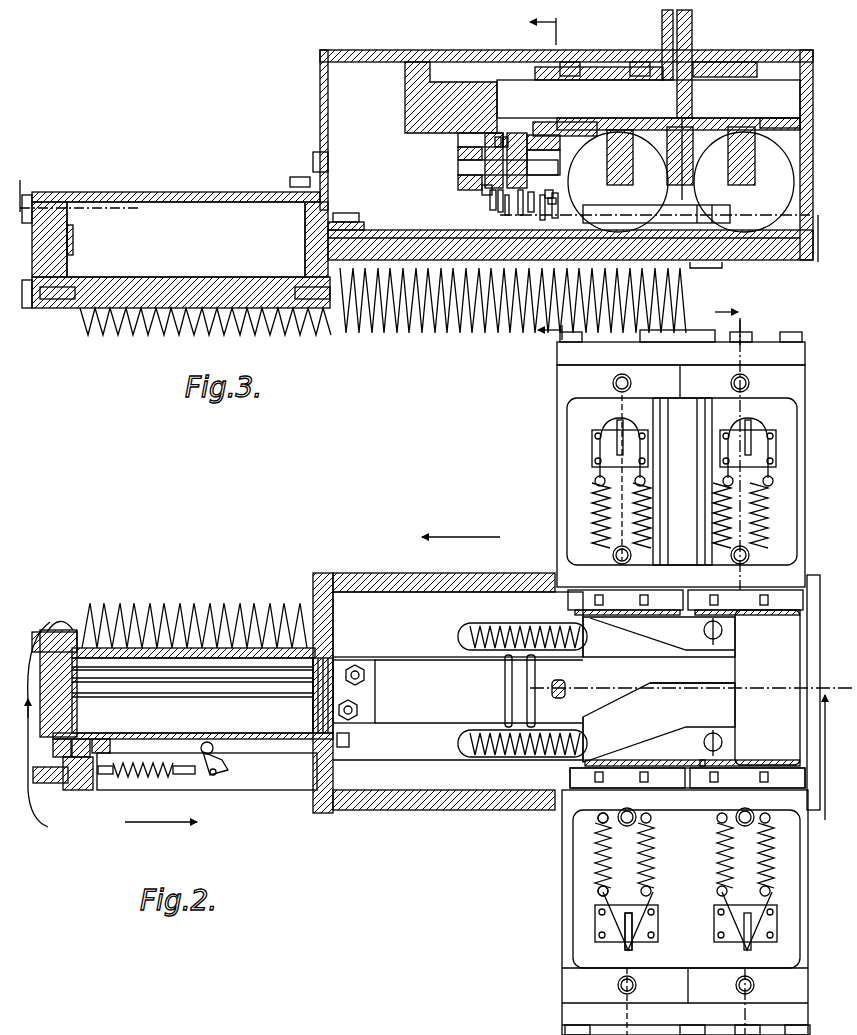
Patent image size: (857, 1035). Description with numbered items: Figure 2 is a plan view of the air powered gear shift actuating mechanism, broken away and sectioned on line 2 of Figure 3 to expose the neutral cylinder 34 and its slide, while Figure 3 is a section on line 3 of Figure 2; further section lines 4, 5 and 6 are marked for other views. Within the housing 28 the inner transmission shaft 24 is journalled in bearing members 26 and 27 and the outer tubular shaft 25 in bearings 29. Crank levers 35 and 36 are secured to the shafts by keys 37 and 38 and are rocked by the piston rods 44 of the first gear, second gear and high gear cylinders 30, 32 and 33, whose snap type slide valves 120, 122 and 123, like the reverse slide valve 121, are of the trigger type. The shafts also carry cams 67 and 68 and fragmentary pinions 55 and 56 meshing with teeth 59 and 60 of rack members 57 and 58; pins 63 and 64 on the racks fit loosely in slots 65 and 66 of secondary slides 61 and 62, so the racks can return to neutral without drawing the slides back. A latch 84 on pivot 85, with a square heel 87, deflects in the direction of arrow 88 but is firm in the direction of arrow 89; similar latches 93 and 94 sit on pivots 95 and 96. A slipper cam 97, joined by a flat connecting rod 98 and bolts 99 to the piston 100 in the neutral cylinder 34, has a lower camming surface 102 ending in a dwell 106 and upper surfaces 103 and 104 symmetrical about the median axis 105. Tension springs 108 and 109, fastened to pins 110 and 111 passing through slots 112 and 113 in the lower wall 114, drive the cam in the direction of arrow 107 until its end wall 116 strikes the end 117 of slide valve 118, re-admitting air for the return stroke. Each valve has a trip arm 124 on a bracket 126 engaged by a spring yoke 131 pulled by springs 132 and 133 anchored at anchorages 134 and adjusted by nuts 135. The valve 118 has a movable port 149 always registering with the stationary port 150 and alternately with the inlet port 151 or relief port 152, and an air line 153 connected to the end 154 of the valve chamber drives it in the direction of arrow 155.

In FIG. 3, the section line 2— 2 is at (417, 225).
In FIG. 2, the section line 3— 3 is at (424, 768).
In FIG. 2, the section line 4- 4 is at (719, 325).
In FIG. 3, the section line 5- 5 is at (538, 178).
In FIG. 3, the section line 6- 6 is at (692, 30).
In FIG. 3, the inner transmission shaft 24 is at (727, 80).
In FIG. 3, the outer tubular transmission shaft 25 is at (598, 66).
In FIG. 3, the bearing member 26 is at (797, 55).
In FIG. 3, the bearing member 27 is at (425, 62).
In FIG. 3, the housing 28 is at (320, 90).
In FIG. 3, the bearings 29 is at (570, 62).
In FIG. 2, the first-gear cylinder 30 is at (797, 372).
In FIG. 2, the second-gear cylinder 32 is at (578, 950).
In FIG. 2, the high-gear cylinder 33 is at (567, 415).
In FIG. 3, the neutral cylinder 34 is at (185, 192).
In FIG. 2, the neutral cylinder 34 is at (83, 640).
In FIG. 3, the crank lever 35 is at (752, 152).
In FIG. 3, the crank lever 36 is at (630, 150).
In FIG. 3, the key 37 is at (738, 120).
In FIG. 3, the key 38 is at (645, 118).
In FIG. 3, the piston rod 44 is at (640, 185).
In FIG. 3, the fragmentary pinion 55 is at (458, 140).
In FIG. 3, the fragmentary pinion 56 is at (545, 125).
In FIG. 3, the toothed rack member 57 is at (458, 185).
In FIG. 3, the toothed rack member 58 is at (548, 158).
In FIG. 3, the teeth 59 is at (458, 153).
In FIG. 3, the teeth 60 is at (520, 133).
In FIG. 3, the secondary slide 61 is at (492, 135).
In FIG. 3, the secondary slide 62 is at (495, 135).
In FIG. 3, the pin 63 is at (458, 167).
In FIG. 3, the pin 64 is at (560, 168).
In FIG. 3, the elongated slot 65 is at (479, 193).
In FIG. 3, the elongated slot 66 is at (508, 135).
In FIG. 3, the cam 67 is at (692, 18).
In FIG. 3, the cam 68 is at (660, 17).
In FIG. 3, the latch type cam follower 84 is at (556, 200).
In FIG. 2, the latch type cam follower 84 is at (565, 688).
In FIG. 3, the pivot 85 is at (553, 192).
In FIG. 3, the square heel 87 is at (537, 202).
In FIG. 3, the arrow 88 is at (562, 209).
In FIG. 3, the arrow 89 is at (540, 210).
In FIG. 3, the latch-type cam follower 93 is at (506, 212).
In FIG. 2, the latch-type cam follower 93 is at (505, 678).
In FIG. 3, the latch-type cam follower 94 is at (514, 209).
In FIG. 2, the latch-type cam follower 94 is at (535, 668).
In FIG. 3, the pivot 95 is at (492, 205).
In FIG. 3, the pivot 96 is at (510, 201).
In FIG. 3, the slipper cam 97 is at (730, 220).
In FIG. 2, the slipper cam 97 is at (735, 664).
In FIG. 3, the flat connecting rod 98 is at (398, 240).
In FIG. 2, the flat connecting rod 98 is at (423, 714).
In FIG. 3, the bolts 99 is at (346, 213).
In FIG. 2, the bolts 99 is at (357, 665).
In FIG. 3, the piston 100 is at (312, 245).
In FIG. 2, the piston 100 is at (313, 703).
In FIG. 2, the inclined camming surface 102 is at (616, 686).
In FIG. 2, the inclined camming surface 103 is at (650, 640).
In FIG. 2, the inclined camming surface 104 is at (645, 745).
In FIG. 2, the longitudinal median axis 105 is at (783, 688).
In FIG. 2, the dwell 106 is at (697, 683).
In FIG. 2, the arrow 107 is at (461, 527).
In FIG. 3, the helical tension spring 108 is at (292, 334).
In FIG. 2, the helical tension spring 108 is at (522, 617).
In FIG. 2, the helical tension spring 109 is at (505, 760).
In FIG. 2, the pin 110 is at (722, 630).
In FIG. 2, the pin 111 is at (722, 742).
In FIG. 2, the slot 112 is at (490, 624).
In FIG. 2, the slot 113 is at (496, 730).
In FIG. 3, the lower wall 114 is at (748, 258).
In FIG. 2, the lower wall 114 is at (425, 635).
In FIG. 2, the end wall 116 is at (587, 735).
In FIG. 2, the end 117 is at (340, 740).
In FIG. 2, the slide valve 118 is at (283, 755).
In FIG. 2, the slide valve 120 is at (740, 408).
In FIG. 2, the slide valve 121 is at (760, 952).
In FIG. 2, the slide valve 122 is at (642, 955).
In FIG. 2, the slide valve 123 is at (600, 420).
In FIG. 2, the trip arm 124 is at (211, 780).
In FIG. 2, the bracket 126 is at (590, 918).
In FIG. 2, the spring yoke 131 is at (185, 778).
In FIG. 2, the helical tension spring 132 is at (656, 855).
In FIG. 2, the helical tension spring 133 is at (600, 850).
In FIG. 2, the spring anchorages 134 is at (600, 818).
In FIG. 2, the terminal plate 135 is at (655, 781).
In FIG. 2, the movable port 149 is at (95, 740).
In FIG. 2, the stationary port 150 is at (70, 740).
In FIG. 2, the stationary inlet port 151 is at (58, 784).
In FIG. 2, the stationary relief port 152 is at (115, 747).
In FIG. 2, the air line 153 is at (46, 728).
In FIG. 2, the end of valve chamber 154 is at (45, 628).
In FIG. 2, the arrow 155 is at (161, 833).